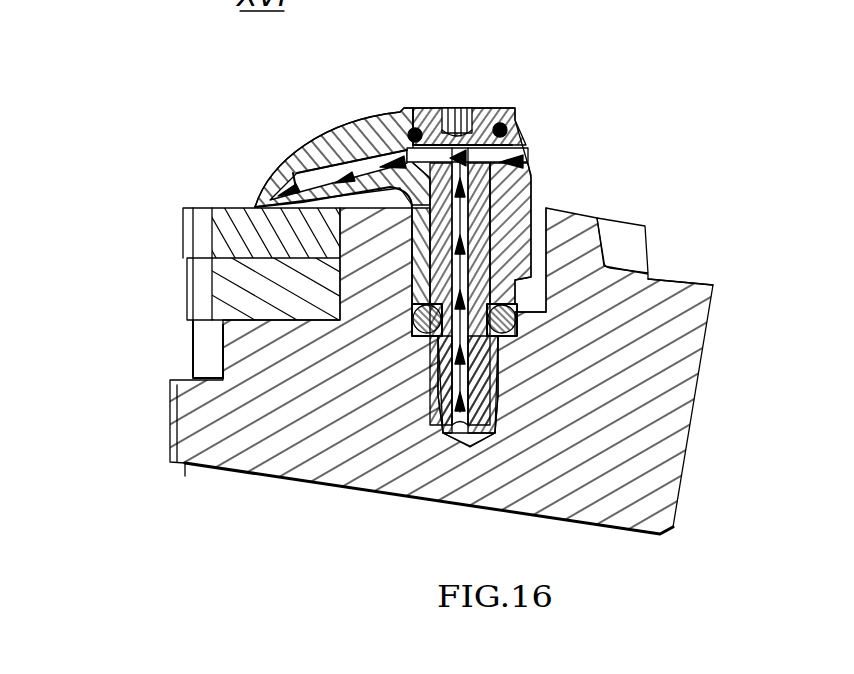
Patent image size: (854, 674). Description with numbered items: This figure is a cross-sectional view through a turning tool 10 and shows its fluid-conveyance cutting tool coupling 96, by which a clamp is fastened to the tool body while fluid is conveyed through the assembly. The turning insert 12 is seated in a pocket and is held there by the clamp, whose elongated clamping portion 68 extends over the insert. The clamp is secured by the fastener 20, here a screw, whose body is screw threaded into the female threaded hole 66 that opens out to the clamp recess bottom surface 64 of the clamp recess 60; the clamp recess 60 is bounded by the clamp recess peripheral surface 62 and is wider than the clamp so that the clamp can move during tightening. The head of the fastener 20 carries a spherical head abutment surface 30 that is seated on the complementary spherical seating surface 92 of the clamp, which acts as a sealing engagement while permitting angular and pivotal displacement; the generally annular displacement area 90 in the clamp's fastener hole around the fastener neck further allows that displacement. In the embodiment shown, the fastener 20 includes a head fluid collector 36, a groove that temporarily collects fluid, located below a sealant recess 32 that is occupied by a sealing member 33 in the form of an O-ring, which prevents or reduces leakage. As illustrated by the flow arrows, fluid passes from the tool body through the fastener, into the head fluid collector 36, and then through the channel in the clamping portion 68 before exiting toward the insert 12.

The turning tool 10 is at (165, 155).
The turning insert 12 is at (170, 240).
The fastener 20 is at (490, 82).
The spherical head abutment surface 30 is at (508, 160).
The sealant recess 32 is at (400, 150).
The sealing member 33 is at (410, 128).
The head fluid collector 36 is at (420, 128).
The clamp recess 60 is at (539, 213).
The clamp recess peripheral surface 62 is at (537, 280).
The clamp recess bottom surface 64 is at (653, 278).
The female threaded hole 66 is at (425, 375).
The clamping portion 68 is at (333, 117).
The displacement area 90 is at (405, 200).
The spherical seating surface 92 is at (455, 108).
The fluid-conveyance cutting tool coupling 96 is at (617, 95).